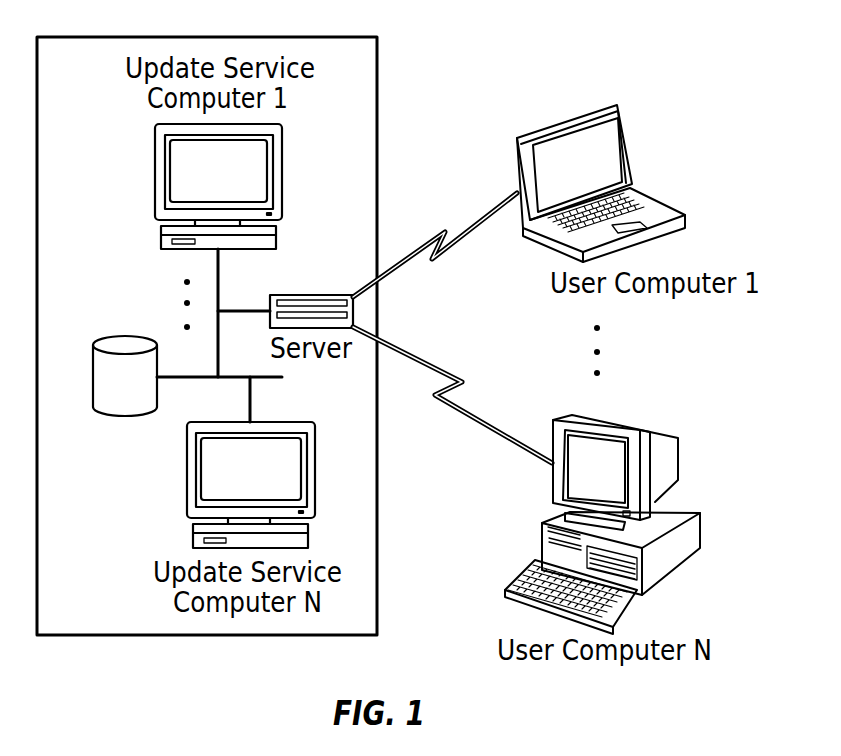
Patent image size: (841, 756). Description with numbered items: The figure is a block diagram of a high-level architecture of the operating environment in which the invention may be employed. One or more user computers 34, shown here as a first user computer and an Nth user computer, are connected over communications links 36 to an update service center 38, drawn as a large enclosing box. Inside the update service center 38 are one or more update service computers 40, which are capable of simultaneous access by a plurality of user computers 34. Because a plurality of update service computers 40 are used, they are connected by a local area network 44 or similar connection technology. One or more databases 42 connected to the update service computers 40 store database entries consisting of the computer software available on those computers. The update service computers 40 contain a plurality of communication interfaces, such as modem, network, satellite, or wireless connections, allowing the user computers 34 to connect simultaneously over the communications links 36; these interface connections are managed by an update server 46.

The user computer 34 is at (667, 207).
The communications link 36 is at (455, 248).
The update service center 38 is at (137, 37).
The update service computer 40 is at (155, 172).
The database 42 is at (124, 336).
The local area network 44 is at (220, 288).
The update server 46 is at (300, 295).